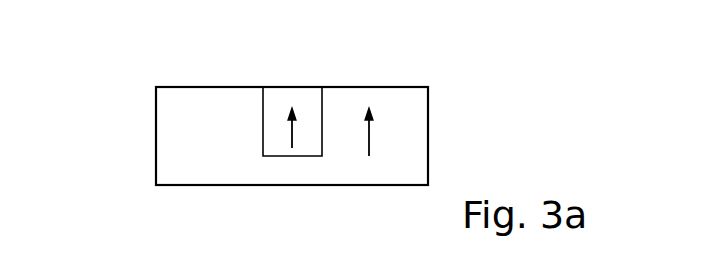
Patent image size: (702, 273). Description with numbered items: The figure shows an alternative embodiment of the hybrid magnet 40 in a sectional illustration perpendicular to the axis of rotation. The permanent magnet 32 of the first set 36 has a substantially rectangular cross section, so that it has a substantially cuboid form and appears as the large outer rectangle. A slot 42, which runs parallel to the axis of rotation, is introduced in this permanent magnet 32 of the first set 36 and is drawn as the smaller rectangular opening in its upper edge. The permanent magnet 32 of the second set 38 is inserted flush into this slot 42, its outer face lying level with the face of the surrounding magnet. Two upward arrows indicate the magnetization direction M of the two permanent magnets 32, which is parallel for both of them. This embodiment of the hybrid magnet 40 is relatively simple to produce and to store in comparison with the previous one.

The permanent magnet 32 is at (162, 103).
The first set 36 is at (162, 167).
The second set 38 is at (283, 100).
The hybrid magnet 40 is at (412, 97).
The slot 42 is at (262, 98).
The magnetization direction M is at (292, 140).